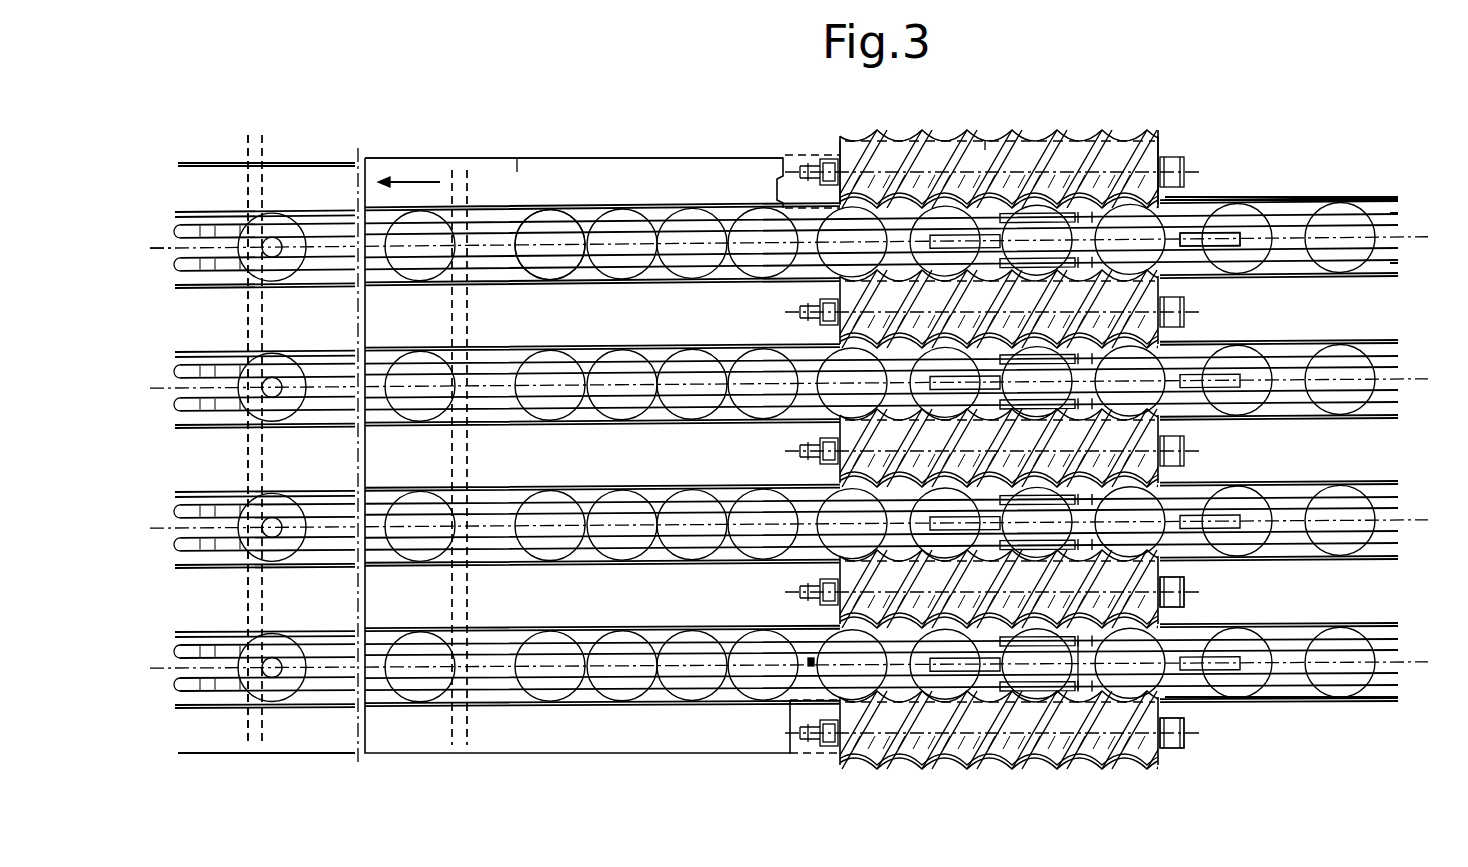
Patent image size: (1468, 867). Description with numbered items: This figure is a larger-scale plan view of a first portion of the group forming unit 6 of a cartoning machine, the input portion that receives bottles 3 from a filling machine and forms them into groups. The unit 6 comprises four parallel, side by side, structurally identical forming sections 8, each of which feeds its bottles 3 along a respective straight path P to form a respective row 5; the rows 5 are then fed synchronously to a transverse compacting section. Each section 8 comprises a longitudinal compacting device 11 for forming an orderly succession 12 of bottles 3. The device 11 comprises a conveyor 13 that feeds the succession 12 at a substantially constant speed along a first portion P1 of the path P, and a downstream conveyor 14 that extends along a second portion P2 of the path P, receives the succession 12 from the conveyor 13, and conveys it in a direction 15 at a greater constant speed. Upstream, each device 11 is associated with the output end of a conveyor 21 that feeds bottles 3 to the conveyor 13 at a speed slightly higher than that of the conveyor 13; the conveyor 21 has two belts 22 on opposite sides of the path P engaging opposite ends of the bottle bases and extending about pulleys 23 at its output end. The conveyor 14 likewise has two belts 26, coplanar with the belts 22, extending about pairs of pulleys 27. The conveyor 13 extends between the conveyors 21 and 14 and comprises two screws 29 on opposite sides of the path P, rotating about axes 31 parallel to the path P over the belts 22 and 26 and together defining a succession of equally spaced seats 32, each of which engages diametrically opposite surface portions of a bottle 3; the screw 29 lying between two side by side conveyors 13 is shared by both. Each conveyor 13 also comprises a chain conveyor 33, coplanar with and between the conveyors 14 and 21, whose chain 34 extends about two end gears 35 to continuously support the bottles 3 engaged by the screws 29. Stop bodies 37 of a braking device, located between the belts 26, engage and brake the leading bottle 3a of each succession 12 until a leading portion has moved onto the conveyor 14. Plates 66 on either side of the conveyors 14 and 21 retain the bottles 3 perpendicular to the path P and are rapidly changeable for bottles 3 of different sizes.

The bottles 3 is at (560, 218).
The leading bottle 3a is at (832, 170).
The row 5 is at (646, 186).
The group forming unit 6 is at (272, 146).
The forming sections 8 is at (720, 128).
The longitudinal compacting device 11 is at (1080, 122).
The succession 12 is at (930, 150).
The conveyor 13 is at (1118, 127).
The conveyor 14 is at (460, 150).
The direction 15 is at (418, 168).
The conveyor 21 is at (1362, 178).
The belts 22 is at (1398, 215).
The pulleys 23 is at (1200, 192).
The belts 26 is at (508, 230).
The pulleys 27 is at (212, 215).
The screws 29 is at (1176, 704).
The axes 31 is at (1186, 594).
The seats 32 is at (888, 770).
The chain conveyor 33 is at (1080, 692).
The chain 34 is at (1100, 715).
The end gears 35 is at (975, 712).
The stop bodies 37 is at (812, 664).
The plates 66 is at (742, 180).
The path P is at (160, 246).
The first portion P1 is at (987, 140).
The second portion P2 is at (519, 160).